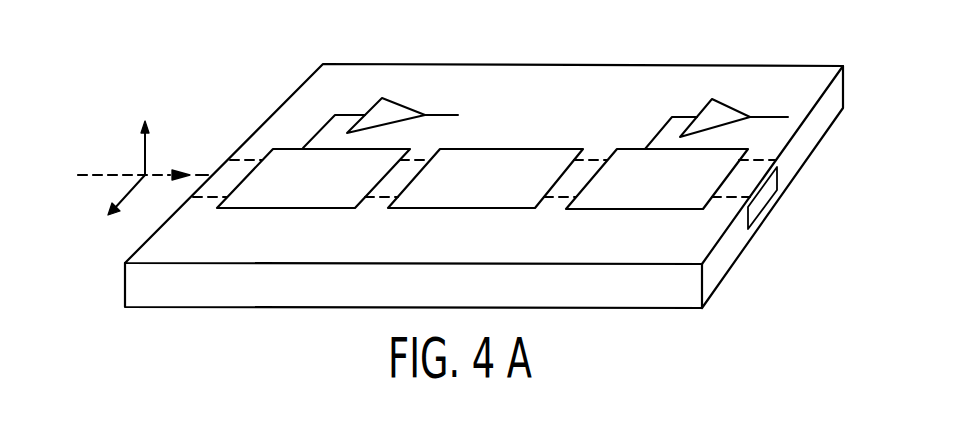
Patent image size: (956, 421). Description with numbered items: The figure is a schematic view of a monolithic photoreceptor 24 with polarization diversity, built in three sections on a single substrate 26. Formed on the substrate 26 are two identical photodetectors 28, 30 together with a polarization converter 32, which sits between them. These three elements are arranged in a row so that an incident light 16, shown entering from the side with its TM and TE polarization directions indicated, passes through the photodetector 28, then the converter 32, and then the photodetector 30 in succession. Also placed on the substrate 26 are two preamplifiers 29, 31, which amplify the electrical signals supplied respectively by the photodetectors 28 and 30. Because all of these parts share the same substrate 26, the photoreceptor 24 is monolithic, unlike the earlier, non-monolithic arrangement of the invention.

The incident light 16 is at (88, 168).
The photoreceptor 24 is at (343, 53).
The substrate 26 is at (788, 90).
The photodetector 28 is at (283, 210).
The preamplifier 29 is at (412, 110).
The photodetector 30 is at (643, 210).
The preamplifier 31 is at (713, 99).
The polarization converter 32 is at (468, 210).